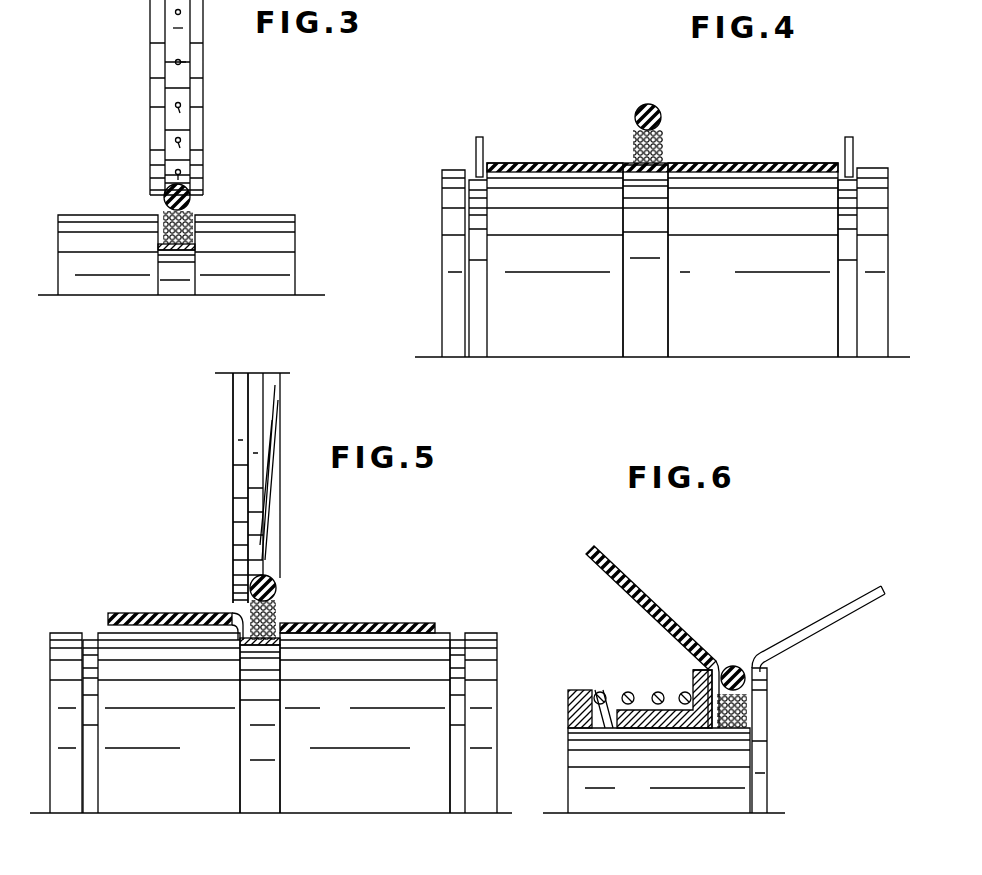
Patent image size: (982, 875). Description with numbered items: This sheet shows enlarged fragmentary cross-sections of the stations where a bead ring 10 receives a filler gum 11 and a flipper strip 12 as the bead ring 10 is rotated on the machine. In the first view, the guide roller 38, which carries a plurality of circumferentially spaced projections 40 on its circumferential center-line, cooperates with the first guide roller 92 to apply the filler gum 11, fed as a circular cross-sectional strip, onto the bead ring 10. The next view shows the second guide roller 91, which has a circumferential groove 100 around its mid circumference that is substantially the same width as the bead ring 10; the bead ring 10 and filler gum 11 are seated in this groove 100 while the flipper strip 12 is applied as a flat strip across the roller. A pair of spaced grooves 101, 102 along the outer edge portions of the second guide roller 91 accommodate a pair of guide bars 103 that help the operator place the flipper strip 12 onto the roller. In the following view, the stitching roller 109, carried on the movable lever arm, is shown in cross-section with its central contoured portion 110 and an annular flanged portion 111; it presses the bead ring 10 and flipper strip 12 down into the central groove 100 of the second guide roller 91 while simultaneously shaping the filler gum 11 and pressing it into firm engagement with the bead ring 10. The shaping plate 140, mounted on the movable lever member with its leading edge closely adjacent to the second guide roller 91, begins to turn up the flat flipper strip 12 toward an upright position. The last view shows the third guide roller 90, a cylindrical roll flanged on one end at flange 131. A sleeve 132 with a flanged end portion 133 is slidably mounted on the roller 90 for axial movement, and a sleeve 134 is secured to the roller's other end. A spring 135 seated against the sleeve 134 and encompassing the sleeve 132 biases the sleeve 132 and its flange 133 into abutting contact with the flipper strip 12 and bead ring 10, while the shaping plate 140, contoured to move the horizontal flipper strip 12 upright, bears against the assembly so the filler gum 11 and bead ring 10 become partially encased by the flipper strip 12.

In FIG. 4, the bead ring 10 is at (662, 140).
In FIG. 5, the bead ring 10 is at (276, 608).
In FIG. 6, the bead ring 10 is at (748, 703).
In FIG. 4, the filler gum 11 is at (640, 110).
In FIG. 5, the filler gum 11 is at (270, 578).
In FIG. 6, the filler gum 11 is at (737, 665).
In FIG. 4, the flipper strip 12 is at (722, 163).
In FIG. 5, the flipper strip 12 is at (340, 625).
In FIG. 6, the flipper strip 12 is at (838, 605).
In FIG. 3, the guide roller 38 is at (208, 120).
In FIG. 3, the projections 40 is at (176, 140).
In FIG. 6, the third guide roller 90 is at (712, 790).
In FIG. 4, the second guide roller 91 is at (580, 332).
In FIG. 5, the second guide roller 91 is at (337, 800).
In FIG. 3, the first guide roller 92 is at (288, 243).
In FIG. 4, the circumferential groove 100 is at (640, 176).
In FIG. 5, the circumferential groove 100 is at (260, 795).
In FIG. 4, the groove 101 is at (472, 218).
In FIG. 5, the groove 101 is at (92, 800).
In FIG. 4, the groove 102 is at (852, 340).
In FIG. 5, the groove 102 is at (457, 805).
In FIG. 4, the guide bars 103 is at (479, 135).
In FIG. 5, the stitching roller 109 is at (194, 427).
In FIG. 5, the guide 110 is at (258, 493).
In FIG. 5, the annular flanged portion 111 is at (240, 580).
In FIG. 6, the flange 131 is at (768, 690).
In FIG. 6, the sleeve 132 is at (645, 712).
In FIG. 6, the flanged end portion 133 is at (700, 680).
In FIG. 6, the sleeve 134 is at (585, 697).
In FIG. 6, the spring 135 is at (612, 695).
In FIG. 5, the shaping plate 140 is at (108, 620).
In FIG. 6, the shaping plate 140 is at (588, 552).